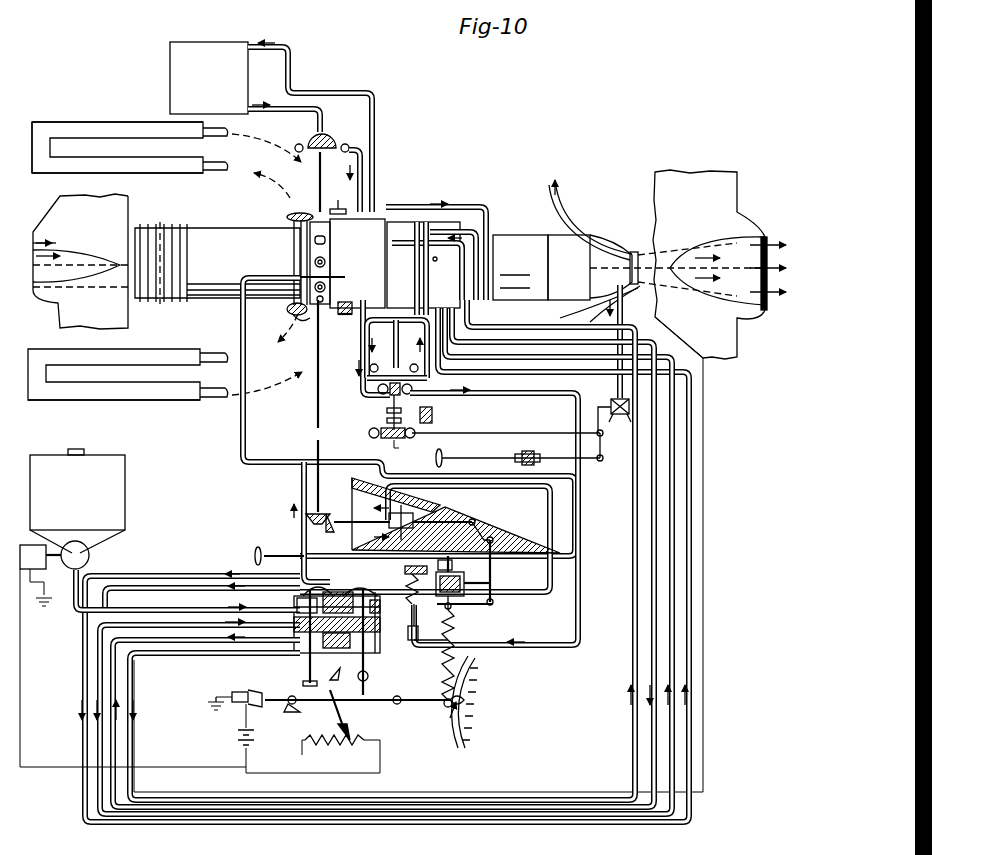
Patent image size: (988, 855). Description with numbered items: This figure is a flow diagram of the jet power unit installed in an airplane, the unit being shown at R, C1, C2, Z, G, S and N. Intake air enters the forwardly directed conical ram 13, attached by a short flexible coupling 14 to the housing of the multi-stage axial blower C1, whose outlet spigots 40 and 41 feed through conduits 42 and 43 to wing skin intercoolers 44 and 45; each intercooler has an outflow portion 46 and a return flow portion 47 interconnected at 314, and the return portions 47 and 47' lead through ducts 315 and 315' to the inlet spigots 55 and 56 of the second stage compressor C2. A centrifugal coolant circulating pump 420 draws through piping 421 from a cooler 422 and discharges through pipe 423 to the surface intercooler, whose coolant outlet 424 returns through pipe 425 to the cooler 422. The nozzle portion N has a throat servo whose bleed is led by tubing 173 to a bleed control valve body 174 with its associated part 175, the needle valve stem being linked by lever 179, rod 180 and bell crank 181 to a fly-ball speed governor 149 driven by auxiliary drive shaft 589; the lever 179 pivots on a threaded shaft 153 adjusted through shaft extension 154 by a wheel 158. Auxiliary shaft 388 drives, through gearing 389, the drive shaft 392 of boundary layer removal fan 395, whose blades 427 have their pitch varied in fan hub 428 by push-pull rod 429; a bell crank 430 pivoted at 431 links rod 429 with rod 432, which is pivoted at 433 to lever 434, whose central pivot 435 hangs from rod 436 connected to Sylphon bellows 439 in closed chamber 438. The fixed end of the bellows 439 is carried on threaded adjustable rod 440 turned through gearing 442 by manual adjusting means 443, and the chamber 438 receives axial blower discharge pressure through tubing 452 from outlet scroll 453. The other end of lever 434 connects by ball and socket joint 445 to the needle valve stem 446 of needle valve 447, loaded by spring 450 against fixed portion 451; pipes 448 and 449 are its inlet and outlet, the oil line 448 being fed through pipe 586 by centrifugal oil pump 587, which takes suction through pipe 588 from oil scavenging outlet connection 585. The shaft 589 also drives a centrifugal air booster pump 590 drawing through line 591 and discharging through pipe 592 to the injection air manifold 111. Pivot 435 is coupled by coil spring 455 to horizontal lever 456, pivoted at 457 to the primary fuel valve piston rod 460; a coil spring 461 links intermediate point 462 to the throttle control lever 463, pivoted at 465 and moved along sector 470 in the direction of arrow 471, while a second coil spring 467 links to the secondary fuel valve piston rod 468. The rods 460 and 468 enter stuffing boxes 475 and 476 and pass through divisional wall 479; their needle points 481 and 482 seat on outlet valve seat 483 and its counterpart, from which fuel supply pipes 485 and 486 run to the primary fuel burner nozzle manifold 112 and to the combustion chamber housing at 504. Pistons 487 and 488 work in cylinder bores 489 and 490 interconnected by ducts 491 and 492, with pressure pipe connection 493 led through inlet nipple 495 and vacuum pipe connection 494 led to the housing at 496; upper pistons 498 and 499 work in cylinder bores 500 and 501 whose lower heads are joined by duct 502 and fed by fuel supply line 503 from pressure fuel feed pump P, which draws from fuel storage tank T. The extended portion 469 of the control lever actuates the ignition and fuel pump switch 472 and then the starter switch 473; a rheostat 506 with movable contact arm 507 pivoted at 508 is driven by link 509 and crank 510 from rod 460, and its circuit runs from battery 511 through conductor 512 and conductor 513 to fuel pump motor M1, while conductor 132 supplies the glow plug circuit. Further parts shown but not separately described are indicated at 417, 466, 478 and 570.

The control box 422 is at (213, 85).
The conduit 425 is at (307, 68).
The conduit 424 is at (368, 114).
The conduit 421 is at (284, 118).
The valve 420 is at (325, 166).
The conduit 423 is at (356, 157).
The fitting 55 is at (343, 201).
The heat exchanger passage 44 is at (119, 155).
The heat exchanger wall 314 is at (40, 130).
The heat exchanger wall 47 is at (117, 115).
The heat exchanger wall 46 is at (146, 173).
The outlet stub 315 is at (252, 145).
The inlet stub 42 is at (246, 174).
The heat exchanger passage 45 is at (109, 381).
The stub 43 is at (249, 338).
The outlet stub 315' is at (251, 384).
The heat exchanger wall 47' is at (114, 408).
The air inlet 13 is at (98, 235).
The inlet region R is at (76, 256).
The compressor inlet flange 14 is at (160, 224).
The first compressor C1 is at (210, 263).
The shaft bearing 40 is at (290, 213).
The second compressor C2 is at (364, 273).
The bleed fitting 453 is at (288, 310).
The bleed passage 41 is at (292, 321).
The fitting 56 is at (345, 316).
The combustion section 111 is at (405, 257).
The conduit 504 is at (390, 241).
The conduits 112 is at (439, 268).
The conduit Z is at (453, 262).
The conduit 495 is at (390, 207).
The conduit 585 is at (332, 289).
The gas generator section G is at (520, 267).
The section S is at (569, 267).
The nozzle N is at (628, 265).
The exhaust casing line 132 is at (703, 772).
The pressure conduit 173 is at (623, 313).
The fuel conduit 485 is at (167, 576).
The fuel control valve 479 is at (294, 626).
The conduit 488 is at (294, 640).
The conduit 490 is at (300, 653).
The conduit 496 is at (451, 292).
The conduit 493 is at (165, 635).
The wire 494 is at (134, 740).
The wire 513 is at (175, 774).
The conduit bundle 570 is at (670, 742).
The return conduit 486 is at (202, 598).
The pump outlet conduit 503 is at (68, 604).
The fuel tank T is at (77, 501).
The fuel pump P is at (75, 555).
The motor M1 is at (133, 656).
The conduit 449 is at (300, 500).
The conduit 452 is at (546, 590).
The restriction 443 is at (256, 553).
The conduit 501 is at (308, 575).
The conduit 588 is at (364, 398).
The valve 587 is at (399, 393).
The conduit 586 is at (492, 394).
The conduit 448 is at (581, 643).
The conduit loop 589 is at (397, 349).
The conduit 591 is at (380, 331).
The conduit 592 is at (408, 325).
The conduit 590 is at (382, 357).
The valve 149 is at (387, 412).
The valve stem 181 is at (411, 442).
The link 180 is at (506, 425).
The link 179 is at (603, 450).
The stop 158 is at (428, 458).
The rod 154 is at (473, 458).
The clamp 153 is at (536, 454).
The valve 174 is at (609, 411).
The valve body 175 is at (621, 425).
The shaft 388 is at (318, 411).
The shaft 389 is at (328, 482).
The bevel gear 392 is at (358, 526).
The cam 427 is at (437, 498).
The cam surface 395 is at (446, 508).
The actuator 428 is at (392, 522).
The rod 429 is at (476, 521).
The link 431 is at (485, 532).
The rod 430 is at (507, 567).
The link 432 is at (481, 562).
The valve 439 is at (466, 580).
The link 438 is at (474, 573).
The stem 442 is at (465, 562).
The follower 440 is at (438, 566).
The guide 451 is at (407, 565).
The spring 450 is at (422, 589).
The pivot 436 is at (503, 601).
The lever 433 is at (494, 605).
The pivot 434 is at (468, 611).
The link 435 is at (464, 614).
The spring 445 is at (437, 622).
The stop 446 is at (425, 631).
The link 447 is at (431, 626).
The spring 455 is at (446, 657).
The spring 456 is at (442, 685).
The pivot 461 is at (431, 695).
The pivot 462 is at (403, 690).
The knob 463 is at (442, 704).
The quadrant 470 is at (463, 749).
The pointer 471 is at (452, 730).
The passage 417 is at (318, 578).
The passage 502 is at (356, 577).
The piston 483 is at (344, 592).
The chamber 482 is at (325, 596).
The piston 498 is at (381, 592).
The stem 500 is at (386, 617).
The port 499 is at (297, 604).
The port 481 is at (294, 611).
The chamber 476 is at (298, 660).
The stem 468 is at (302, 682).
The spring 478 is at (313, 672).
The piston 491 is at (336, 654).
The port 492 is at (309, 682).
The pivot 460 is at (352, 679).
The lever 457 is at (338, 669).
The stem 475 is at (371, 642).
The port 487 is at (383, 654).
The port 489 is at (382, 648).
The link 466 is at (329, 662).
The control rod 467 is at (357, 688).
The switch 473 is at (236, 692).
The wire 472 is at (261, 715).
The pivot 465 is at (281, 706).
The contact 508 is at (324, 704).
The contact 510 is at (359, 704).
The contact 509 is at (382, 704).
The wiper 507 is at (340, 722).
The rheostat 506 is at (334, 746).
The wire 512 is at (313, 756).
The battery 511 is at (238, 742).
The electrical circuit 469 is at (277, 731).